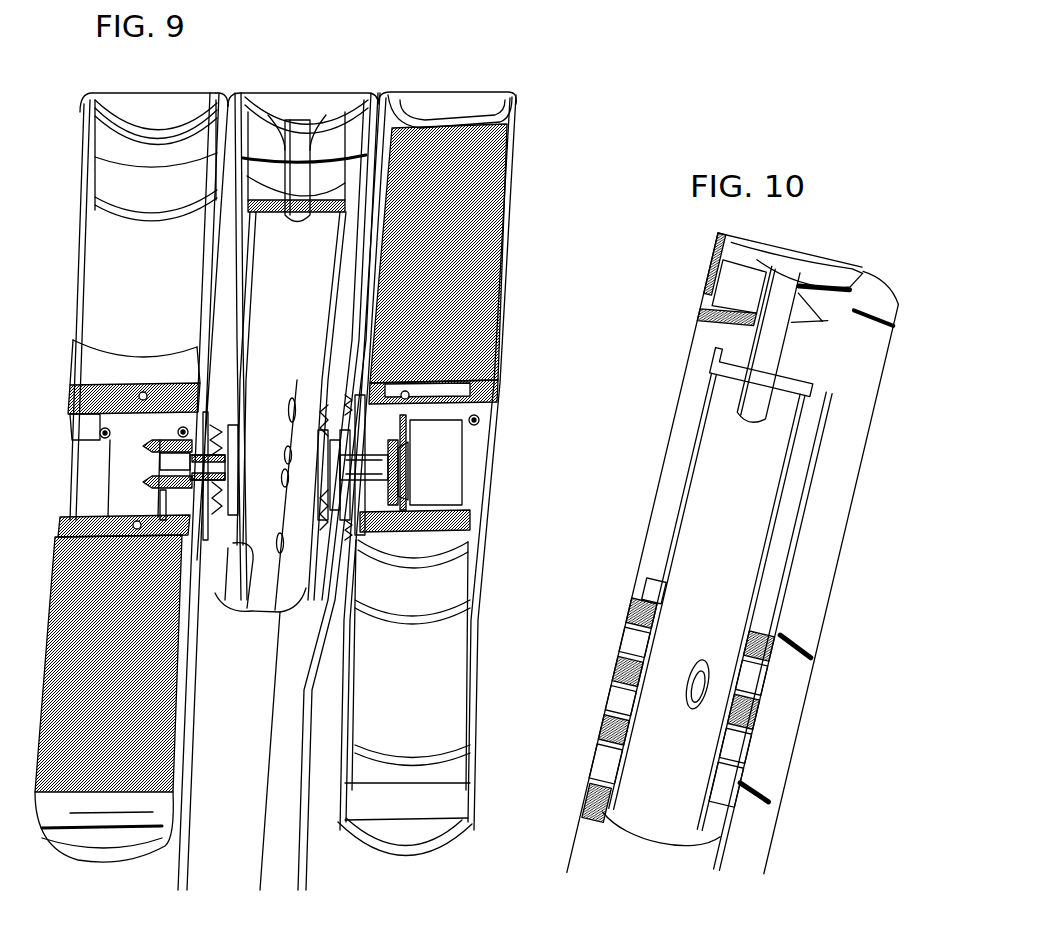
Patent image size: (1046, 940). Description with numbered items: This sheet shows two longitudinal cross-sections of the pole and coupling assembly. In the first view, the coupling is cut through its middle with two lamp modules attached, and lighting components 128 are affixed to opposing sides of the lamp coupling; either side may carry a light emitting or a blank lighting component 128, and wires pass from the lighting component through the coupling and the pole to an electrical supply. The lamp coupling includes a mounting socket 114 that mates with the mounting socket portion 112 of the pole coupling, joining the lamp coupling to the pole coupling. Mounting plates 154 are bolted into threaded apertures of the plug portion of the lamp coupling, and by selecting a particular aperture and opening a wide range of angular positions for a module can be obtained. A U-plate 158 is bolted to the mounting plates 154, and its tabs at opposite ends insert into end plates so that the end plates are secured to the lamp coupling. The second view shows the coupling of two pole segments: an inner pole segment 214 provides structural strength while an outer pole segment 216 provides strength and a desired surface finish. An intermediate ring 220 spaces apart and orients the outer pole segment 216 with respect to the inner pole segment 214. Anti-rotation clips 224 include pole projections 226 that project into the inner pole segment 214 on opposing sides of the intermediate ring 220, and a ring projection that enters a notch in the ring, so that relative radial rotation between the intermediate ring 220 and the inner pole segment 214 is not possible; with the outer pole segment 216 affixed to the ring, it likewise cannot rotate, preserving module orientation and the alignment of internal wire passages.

In FIG. 9, the mounting socket portion 112 is at (343, 417).
In FIG. 9, the mounting socket 114 is at (172, 436).
In FIG. 9, the lighting component 128 is at (85, 152).
In FIG. 10, the lighting component 128 is at (895, 305).
In FIG. 9, the mounting plate 154 is at (405, 458).
In FIG. 9, the U-plate 158 is at (104, 428).
In FIG. 9, the inner pole segment 214 is at (244, 615).
In FIG. 10, the inner pole segment 214 is at (750, 523).
In FIG. 9, the outer pole segment 216 is at (322, 858).
In FIG. 10, the outer pole segment 216 is at (690, 357).
In FIG. 10, the intermediate ring 220 is at (600, 748).
In FIG. 10, the anti-rotation clip 224 is at (642, 598).
In FIG. 10, the pole projection 226 is at (665, 585).